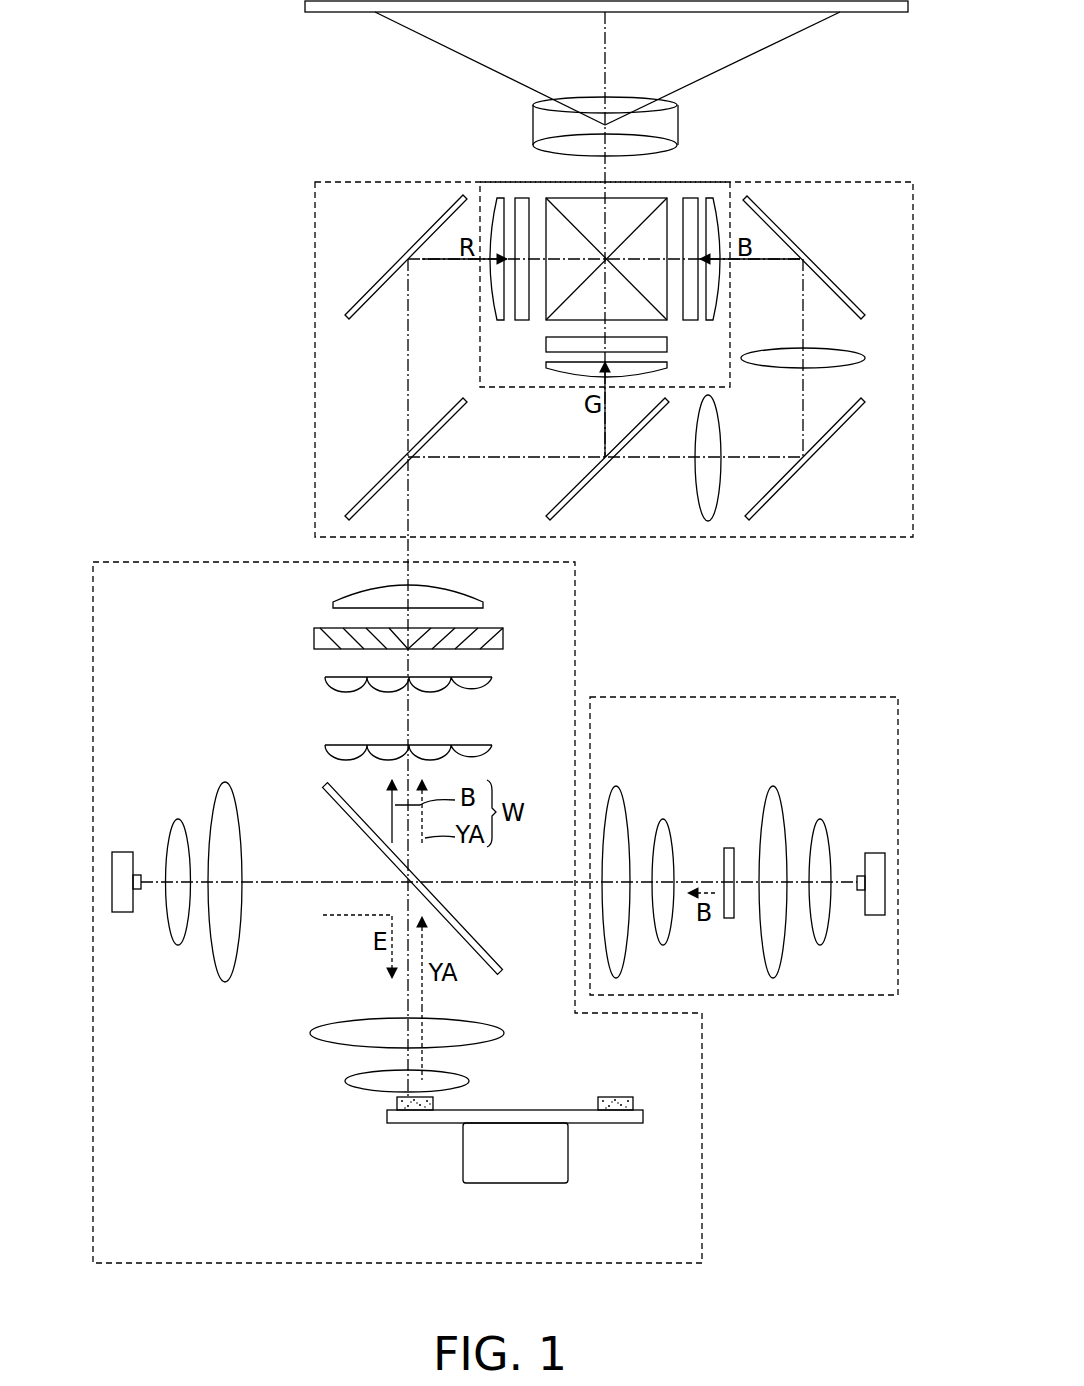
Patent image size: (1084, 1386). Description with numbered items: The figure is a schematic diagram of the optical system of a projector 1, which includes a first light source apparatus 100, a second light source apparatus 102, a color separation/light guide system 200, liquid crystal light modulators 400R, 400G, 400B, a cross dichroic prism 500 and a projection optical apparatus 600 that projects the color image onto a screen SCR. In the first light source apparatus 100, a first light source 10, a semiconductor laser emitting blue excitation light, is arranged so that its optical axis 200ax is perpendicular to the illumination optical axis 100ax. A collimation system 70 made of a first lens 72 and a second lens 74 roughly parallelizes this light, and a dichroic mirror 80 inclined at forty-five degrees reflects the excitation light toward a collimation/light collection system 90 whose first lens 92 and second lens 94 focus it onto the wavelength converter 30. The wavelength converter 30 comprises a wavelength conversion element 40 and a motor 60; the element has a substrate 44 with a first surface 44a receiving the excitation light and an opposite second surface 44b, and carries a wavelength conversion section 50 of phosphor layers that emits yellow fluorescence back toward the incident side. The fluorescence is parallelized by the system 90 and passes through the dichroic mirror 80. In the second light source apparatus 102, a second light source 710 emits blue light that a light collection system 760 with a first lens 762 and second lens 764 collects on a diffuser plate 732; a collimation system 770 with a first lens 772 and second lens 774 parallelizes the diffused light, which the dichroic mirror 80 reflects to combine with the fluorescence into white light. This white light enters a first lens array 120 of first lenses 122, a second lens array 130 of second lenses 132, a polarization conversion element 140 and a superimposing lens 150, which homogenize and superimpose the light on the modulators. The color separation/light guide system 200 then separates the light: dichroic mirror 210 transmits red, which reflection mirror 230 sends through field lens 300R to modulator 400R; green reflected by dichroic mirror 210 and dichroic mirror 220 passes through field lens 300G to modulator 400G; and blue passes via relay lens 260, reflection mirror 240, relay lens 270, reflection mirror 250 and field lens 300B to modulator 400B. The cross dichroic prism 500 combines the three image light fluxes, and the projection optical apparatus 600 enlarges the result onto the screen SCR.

The projector 1 is at (266, 96).
The screen SCR is at (875, 12).
The projection optical apparatus 600 is at (533, 118).
The cross dichroic prism 500 is at (656, 198).
The liquid crystal light modulator 400R is at (522, 198).
The liquid crystal light modulator 400G is at (546, 344).
The liquid crystal light modulator 400B is at (690, 198).
The field lens 300R is at (497, 198).
The field lens 300G is at (546, 372).
The field lens 300B is at (714, 198).
The color separation/light guide system 200 is at (850, 540).
The dichroic mirror 210 is at (362, 490).
The dichroic mirror 220 is at (585, 490).
The reflection mirror 230 is at (349, 310).
The reflection mirror 240 is at (833, 445).
The reflection mirror 250 is at (858, 308).
The relay lens 260 is at (695, 478).
The relay lens 270 is at (835, 352).
The first light source apparatus 100 is at (703, 1225).
The illumination optical axis 100ax is at (408, 548).
The optical axis 200ax is at (290, 885).
The first light source 10 is at (143, 843).
The collimation system 70 is at (202, 831).
The first lens 72 is at (185, 820).
The second lens 74 is at (223, 851).
The dichroic mirror 80 is at (500, 950).
The collimation/light collection system 90 is at (354, 1062).
The first lens 92 is at (352, 1087).
The second lens 94 is at (318, 1040).
The wavelength converter 30 is at (528, 1114).
The wavelength conversion element 40 is at (594, 1133).
The substrate 44 is at (402, 1124).
The first surface 44a is at (524, 1108).
The second surface 44b is at (433, 1125).
The wavelength conversion section 50 is at (634, 1102).
The motor 60 is at (558, 1170).
The first lens array 120 is at (401, 747).
The first lenses 122 is at (340, 757).
The second lens array 130 is at (401, 680).
The second lenses 132 is at (340, 690).
The polarization conversion element 140 is at (495, 628).
The superimposing lens 150 is at (470, 590).
The second light source apparatus 102 is at (871, 998).
The second light source 710 is at (850, 853).
The diffuser plate 732 is at (730, 848).
The light collection system 760 is at (812, 843).
The first lens 762 is at (837, 846).
The second lens 764 is at (785, 790).
The collimation system 770 is at (655, 843).
The first lens 772 is at (680, 846).
The second lens 774 is at (628, 790).